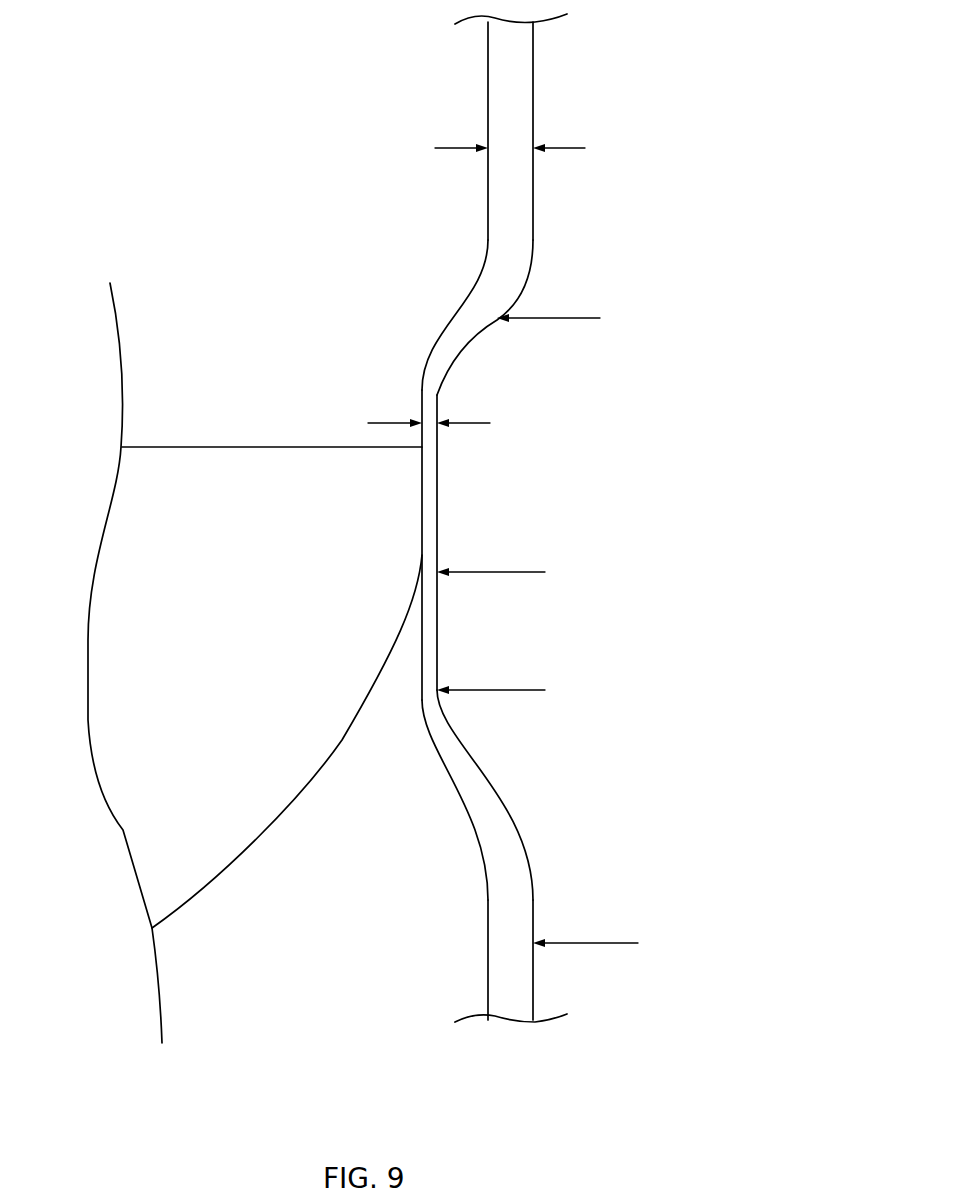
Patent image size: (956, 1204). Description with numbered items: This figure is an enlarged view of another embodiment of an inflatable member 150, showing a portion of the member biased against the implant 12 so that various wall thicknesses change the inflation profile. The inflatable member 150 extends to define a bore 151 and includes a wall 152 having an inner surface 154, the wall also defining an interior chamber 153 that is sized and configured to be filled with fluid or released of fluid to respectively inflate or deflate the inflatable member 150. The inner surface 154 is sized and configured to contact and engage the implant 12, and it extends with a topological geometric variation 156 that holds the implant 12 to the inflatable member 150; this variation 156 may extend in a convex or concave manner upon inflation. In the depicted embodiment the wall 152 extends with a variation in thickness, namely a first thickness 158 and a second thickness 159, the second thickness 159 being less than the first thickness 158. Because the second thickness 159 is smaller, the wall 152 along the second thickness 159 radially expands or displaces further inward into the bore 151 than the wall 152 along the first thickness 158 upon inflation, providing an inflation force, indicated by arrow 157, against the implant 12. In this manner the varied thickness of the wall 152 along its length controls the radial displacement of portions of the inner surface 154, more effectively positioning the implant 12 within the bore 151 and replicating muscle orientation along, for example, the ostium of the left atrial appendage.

The implant 12 is at (246, 445).
The inflatable member 150 is at (494, 518).
The bore 151 is at (488, 920).
The wall 152 is at (490, 795).
The interior chamber 153 is at (475, 753).
The inner surface 154 is at (488, 180).
The topological geometric variation 156 is at (433, 777).
The arrow 157 is at (575, 318).
The first thickness 158 is at (570, 148).
The second thickness 159 is at (477, 423).